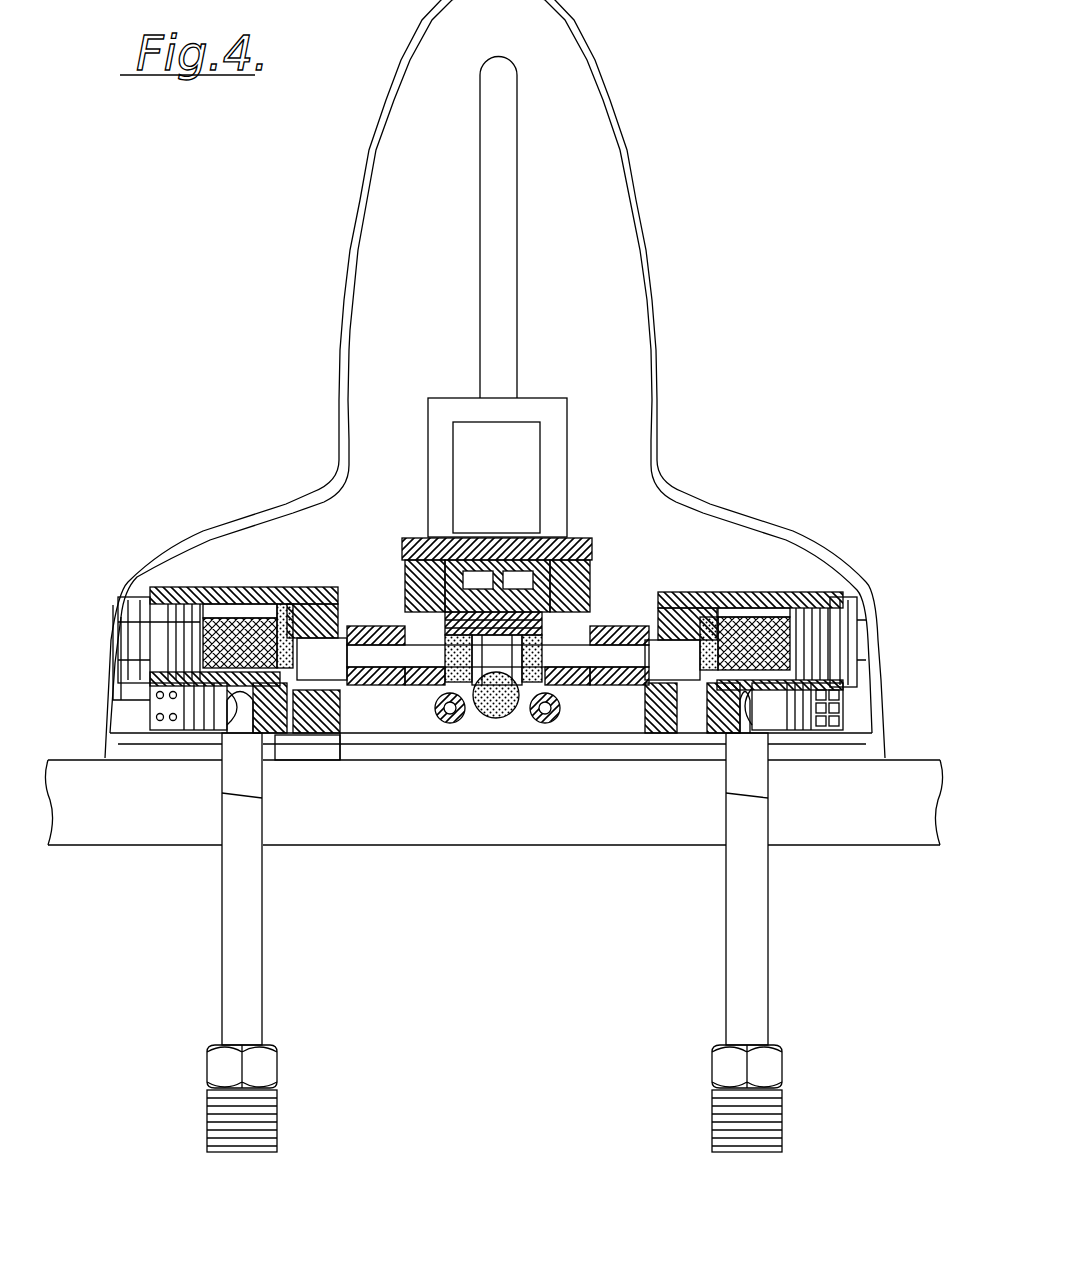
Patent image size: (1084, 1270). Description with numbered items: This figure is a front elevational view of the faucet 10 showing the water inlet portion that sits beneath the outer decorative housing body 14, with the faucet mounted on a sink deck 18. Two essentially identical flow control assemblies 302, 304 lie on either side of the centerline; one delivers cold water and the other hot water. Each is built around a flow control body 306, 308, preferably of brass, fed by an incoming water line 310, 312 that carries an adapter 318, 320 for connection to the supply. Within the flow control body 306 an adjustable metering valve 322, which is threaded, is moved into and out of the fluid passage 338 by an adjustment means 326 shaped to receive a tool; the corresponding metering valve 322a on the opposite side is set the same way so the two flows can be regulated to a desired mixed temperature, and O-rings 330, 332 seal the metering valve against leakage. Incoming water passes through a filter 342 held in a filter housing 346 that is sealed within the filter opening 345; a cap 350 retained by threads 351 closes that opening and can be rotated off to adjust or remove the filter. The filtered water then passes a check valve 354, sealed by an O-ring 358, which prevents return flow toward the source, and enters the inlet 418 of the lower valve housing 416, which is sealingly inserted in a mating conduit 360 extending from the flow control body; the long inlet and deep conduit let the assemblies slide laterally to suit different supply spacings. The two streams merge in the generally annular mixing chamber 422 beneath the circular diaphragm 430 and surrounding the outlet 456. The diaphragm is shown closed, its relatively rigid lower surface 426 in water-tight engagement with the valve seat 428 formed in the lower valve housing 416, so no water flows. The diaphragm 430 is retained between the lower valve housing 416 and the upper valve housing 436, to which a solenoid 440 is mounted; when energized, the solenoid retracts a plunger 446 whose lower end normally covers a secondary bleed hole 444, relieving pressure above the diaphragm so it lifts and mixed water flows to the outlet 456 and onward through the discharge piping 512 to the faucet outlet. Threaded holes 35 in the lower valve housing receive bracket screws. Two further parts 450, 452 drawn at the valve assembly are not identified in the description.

The faucet 10 is at (683, 173).
The outer decorative housing body 14 is at (651, 292).
The discharge piping 512 is at (502, 220).
The solenoid 440 is at (556, 438).
The plunger 446 is at (505, 540).
The valve body wall 452 is at (560, 550).
The secondary bleed hole 444 is at (594, 553).
The valve seat 428 is at (586, 648).
The valve body wall 450 is at (425, 568).
The upper valve housing 436 is at (440, 600).
The filter opening 345 is at (212, 608).
The flow control body 306 is at (188, 588).
The cap 350 is at (132, 605).
The filter 342 is at (233, 635).
The filter housing 346 is at (283, 640).
The check valve 354 is at (330, 645).
The threads 351 is at (170, 628).
The adjustment means 326 is at (157, 707).
The O-ring 330 is at (163, 728).
The O-ring 332 is at (173, 733).
The adjustable metering valve 322 is at (198, 733).
The flow control assembly 302 is at (203, 775).
The O-ring 358 is at (307, 748).
The fluid passage 338 is at (300, 665).
The mating conduit 360 is at (340, 762).
The lower valve housing 416 is at (357, 668).
The inlet 418 is at (397, 657).
The mixing chamber 422 is at (437, 683).
The lower surface 426 is at (483, 712).
The outlet 456 is at (505, 705).
The threaded holes 35 is at (535, 677).
The diaphragm 430 is at (553, 710).
The flow-control assembly 304 is at (797, 776).
The metering valve 322a is at (800, 718).
The sink deck 18 is at (870, 842).
The incoming water line 310 is at (238, 986).
The incoming water line 312 is at (770, 992).
The adapter 318 is at (262, 1068).
The adapter 320 is at (785, 1068).
The flow control body 308 is at (789, 597).